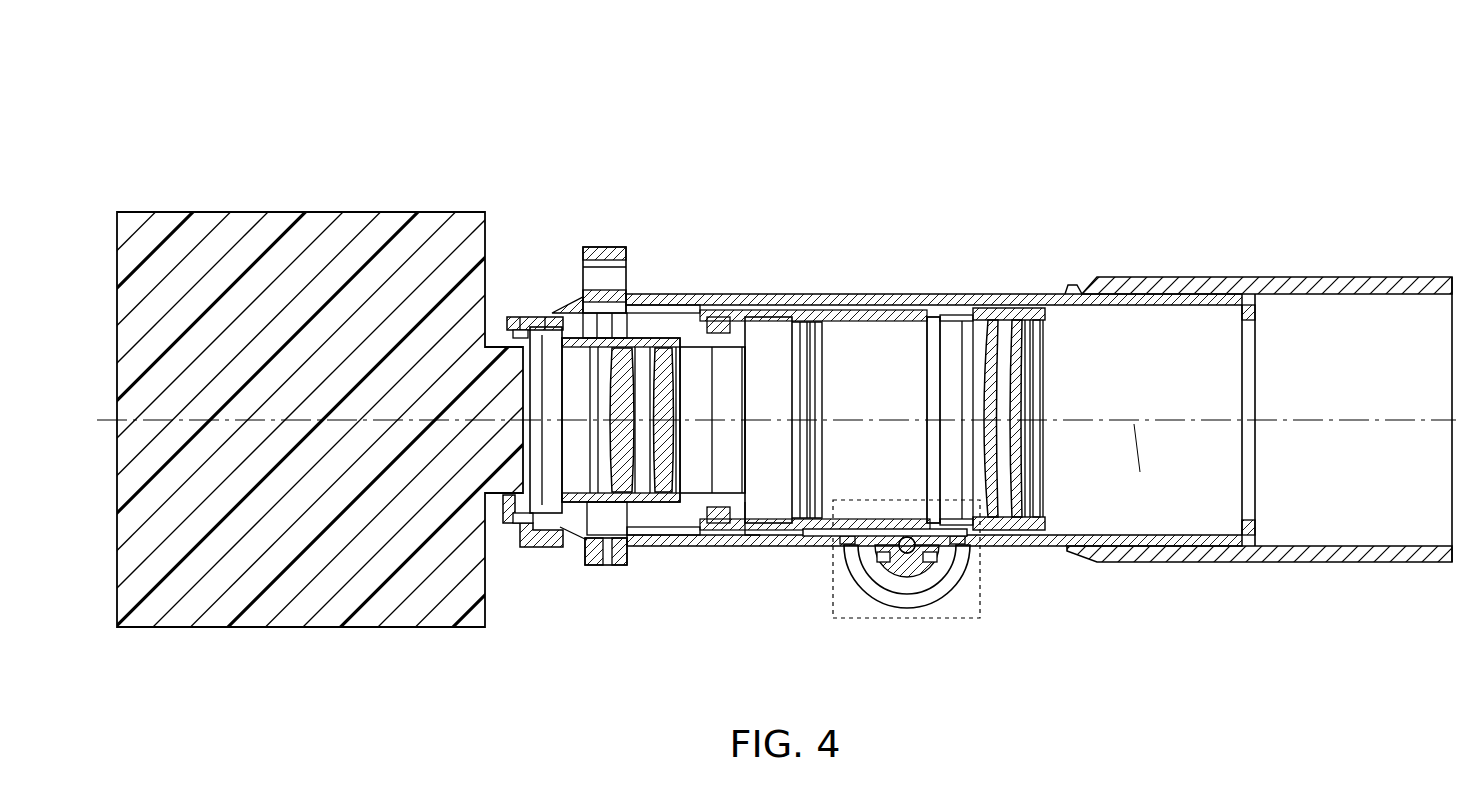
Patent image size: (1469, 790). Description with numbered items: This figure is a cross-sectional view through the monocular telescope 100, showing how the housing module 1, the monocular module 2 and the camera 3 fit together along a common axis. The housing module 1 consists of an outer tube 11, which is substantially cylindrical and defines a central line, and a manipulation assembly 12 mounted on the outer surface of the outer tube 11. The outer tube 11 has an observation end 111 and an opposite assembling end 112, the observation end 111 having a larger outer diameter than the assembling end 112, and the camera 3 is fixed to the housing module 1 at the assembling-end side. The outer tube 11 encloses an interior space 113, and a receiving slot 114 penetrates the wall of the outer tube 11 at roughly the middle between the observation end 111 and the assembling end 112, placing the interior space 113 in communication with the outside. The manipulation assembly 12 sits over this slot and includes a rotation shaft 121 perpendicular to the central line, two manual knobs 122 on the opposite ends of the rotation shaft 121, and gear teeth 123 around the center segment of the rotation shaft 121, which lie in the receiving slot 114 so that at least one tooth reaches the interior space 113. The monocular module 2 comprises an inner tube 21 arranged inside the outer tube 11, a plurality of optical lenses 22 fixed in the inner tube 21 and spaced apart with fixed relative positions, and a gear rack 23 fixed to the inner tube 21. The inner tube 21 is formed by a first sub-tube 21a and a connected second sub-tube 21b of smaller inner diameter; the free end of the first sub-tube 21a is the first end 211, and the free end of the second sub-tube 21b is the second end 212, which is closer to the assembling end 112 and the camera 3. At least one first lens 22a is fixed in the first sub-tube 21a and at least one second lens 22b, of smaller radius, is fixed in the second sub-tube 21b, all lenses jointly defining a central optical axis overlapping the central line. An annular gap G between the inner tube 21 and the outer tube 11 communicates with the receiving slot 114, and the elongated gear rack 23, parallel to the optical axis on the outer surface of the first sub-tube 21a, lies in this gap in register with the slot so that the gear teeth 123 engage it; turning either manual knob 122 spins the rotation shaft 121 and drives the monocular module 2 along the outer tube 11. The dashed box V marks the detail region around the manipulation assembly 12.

The monocular telescope 100 is at (166, 129).
The housing module 1 is at (945, 680).
The outer tube 11 is at (980, 478).
The observation end 111 is at (1443, 553).
The assembling end 112 is at (505, 518).
The interior space 113 is at (1337, 495).
The receiving slot 114 is at (940, 557).
The manipulation assembly 12 is at (874, 571).
The rotation shaft 121 is at (908, 538).
The manual knobs 122 is at (902, 598).
The gear teeth 123 is at (890, 571).
The monocular module 2 is at (683, 505).
The inner tube 21 is at (845, 218).
The first sub-tube 21a is at (829, 312).
The second sub-tube 21b is at (688, 334).
The first end 211 is at (1069, 286).
The second end 212 is at (567, 340).
The optical lenses 22 is at (1403, 92).
The first lens 22a is at (991, 338).
The second lens 22b is at (637, 370).
The gear rack 23 is at (874, 528).
The camera 3 is at (289, 628).
The annular gap G is at (745, 538).
The detail region V is at (850, 621).